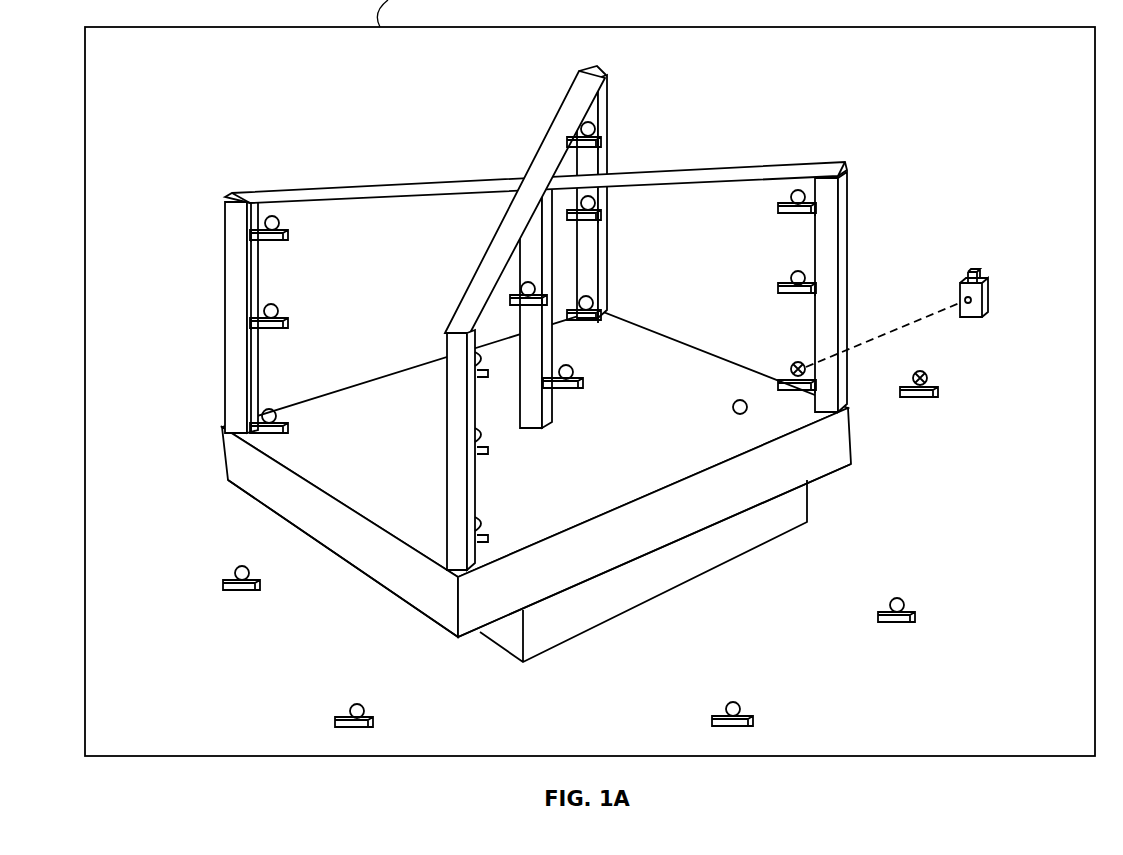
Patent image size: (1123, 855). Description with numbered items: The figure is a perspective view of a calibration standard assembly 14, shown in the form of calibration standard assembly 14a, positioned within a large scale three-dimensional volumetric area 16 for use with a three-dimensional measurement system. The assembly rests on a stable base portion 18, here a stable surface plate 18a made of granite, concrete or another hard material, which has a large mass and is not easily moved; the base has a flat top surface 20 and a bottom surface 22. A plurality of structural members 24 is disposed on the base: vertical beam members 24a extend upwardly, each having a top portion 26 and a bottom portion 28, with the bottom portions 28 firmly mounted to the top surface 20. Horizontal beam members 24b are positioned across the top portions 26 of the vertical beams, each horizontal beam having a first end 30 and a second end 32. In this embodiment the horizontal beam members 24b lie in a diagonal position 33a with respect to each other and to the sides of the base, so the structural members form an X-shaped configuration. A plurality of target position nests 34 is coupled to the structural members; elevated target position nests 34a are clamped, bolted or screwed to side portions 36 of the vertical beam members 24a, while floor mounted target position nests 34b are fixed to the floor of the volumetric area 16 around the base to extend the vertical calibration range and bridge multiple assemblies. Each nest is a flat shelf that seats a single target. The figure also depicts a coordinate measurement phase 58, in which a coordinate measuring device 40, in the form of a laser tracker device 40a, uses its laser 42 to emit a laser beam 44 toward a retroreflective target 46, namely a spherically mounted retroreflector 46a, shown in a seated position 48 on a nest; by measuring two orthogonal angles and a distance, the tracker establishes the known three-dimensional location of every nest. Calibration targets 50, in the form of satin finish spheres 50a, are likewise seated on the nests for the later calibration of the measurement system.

The calibration standard assembly 14 is at (932, 110).
The calibration standard assembly 14a is at (532, 156).
The large scale three-dimensional volumetric area 16 is at (286, 89).
The stable base portion 18 is at (551, 493).
The stable surface plate 18a is at (448, 637).
The top surface 20 is at (583, 498).
The bottom surface 22 is at (637, 612).
The structural members 24 is at (535, 307).
The vertical beam member 24a is at (230, 300).
The horizontal beam member 24b is at (660, 189).
The top portion 26 is at (226, 194).
The bottom portion 28 is at (487, 556).
The first end 30 is at (380, 355).
The second end 32 is at (597, 71).
The diagonal position 33a is at (508, 167).
The target position nest 34 is at (593, 424).
The elevated target position nest 34a is at (285, 234).
The floor mounted target position nest 34b is at (226, 594).
The side portion 36 is at (255, 237).
The coordinate measuring device 40 is at (929, 302).
The laser tracker device 40a is at (988, 300).
The laser 42 is at (965, 298).
The laser beam 44 is at (888, 333).
The retroreflective target 46 is at (865, 346).
The spherically mounted retroreflector 46a is at (790, 372).
The seated position 48 is at (798, 386).
The calibration target 50 is at (579, 414).
The satin finish sphere 50a is at (795, 191).
The coordinate measurement phase 58 is at (988, 506).